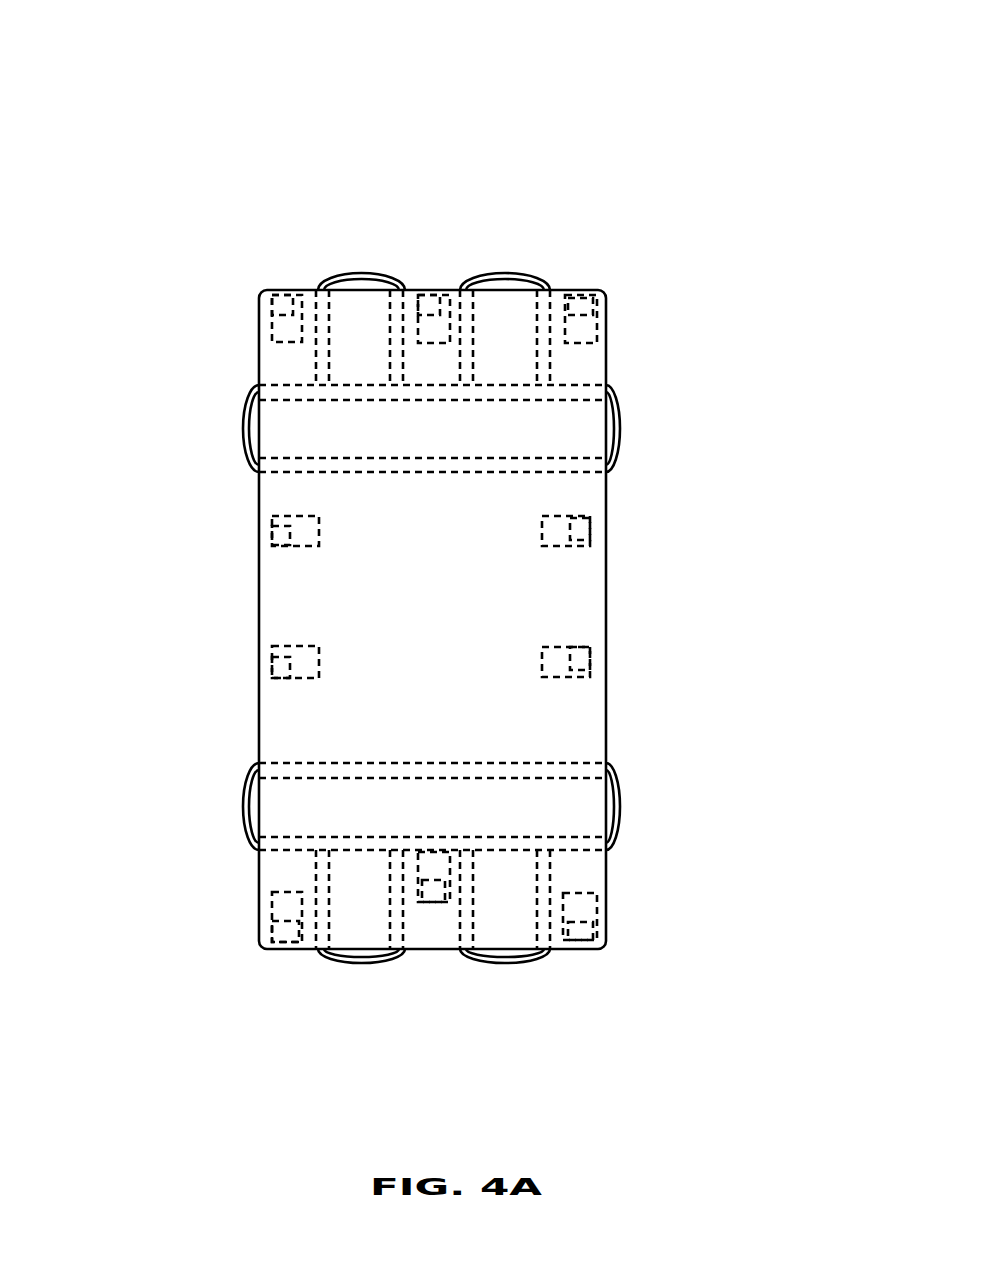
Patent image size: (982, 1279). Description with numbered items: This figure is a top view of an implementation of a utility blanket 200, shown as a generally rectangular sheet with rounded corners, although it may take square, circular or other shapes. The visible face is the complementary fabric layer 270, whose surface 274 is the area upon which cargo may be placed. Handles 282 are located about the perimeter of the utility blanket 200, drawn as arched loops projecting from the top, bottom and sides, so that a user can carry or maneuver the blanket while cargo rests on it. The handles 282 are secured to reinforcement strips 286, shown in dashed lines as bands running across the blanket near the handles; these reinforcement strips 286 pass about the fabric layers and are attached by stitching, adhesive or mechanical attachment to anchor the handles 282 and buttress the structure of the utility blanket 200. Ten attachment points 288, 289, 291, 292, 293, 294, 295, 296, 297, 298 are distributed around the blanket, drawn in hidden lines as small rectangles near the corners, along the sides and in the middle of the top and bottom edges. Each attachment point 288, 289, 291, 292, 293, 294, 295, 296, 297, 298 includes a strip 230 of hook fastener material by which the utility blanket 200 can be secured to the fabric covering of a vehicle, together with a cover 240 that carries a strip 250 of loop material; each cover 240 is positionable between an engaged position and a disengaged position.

The utility blanket 200 is at (404, 88).
The strip 230 is at (431, 305).
The cover 240 is at (436, 292).
The strip of loop material 250 is at (441, 328).
The complementary fabric layer 270 is at (588, 586).
The surface 274 is at (283, 745).
The handle 282 is at (382, 288).
The reinforcement strip 286 is at (318, 303).
The attachment point 288 is at (292, 315).
The attachment point 289 is at (462, 332).
The attachment point 291 is at (593, 300).
The attachment point 292 is at (578, 545).
The attachment point 293 is at (578, 676).
The attachment point 294 is at (575, 945).
The attachment point 295 is at (432, 862).
The attachment point 296 is at (285, 908).
The attachment point 297 is at (302, 678).
The attachment point 298 is at (302, 546).